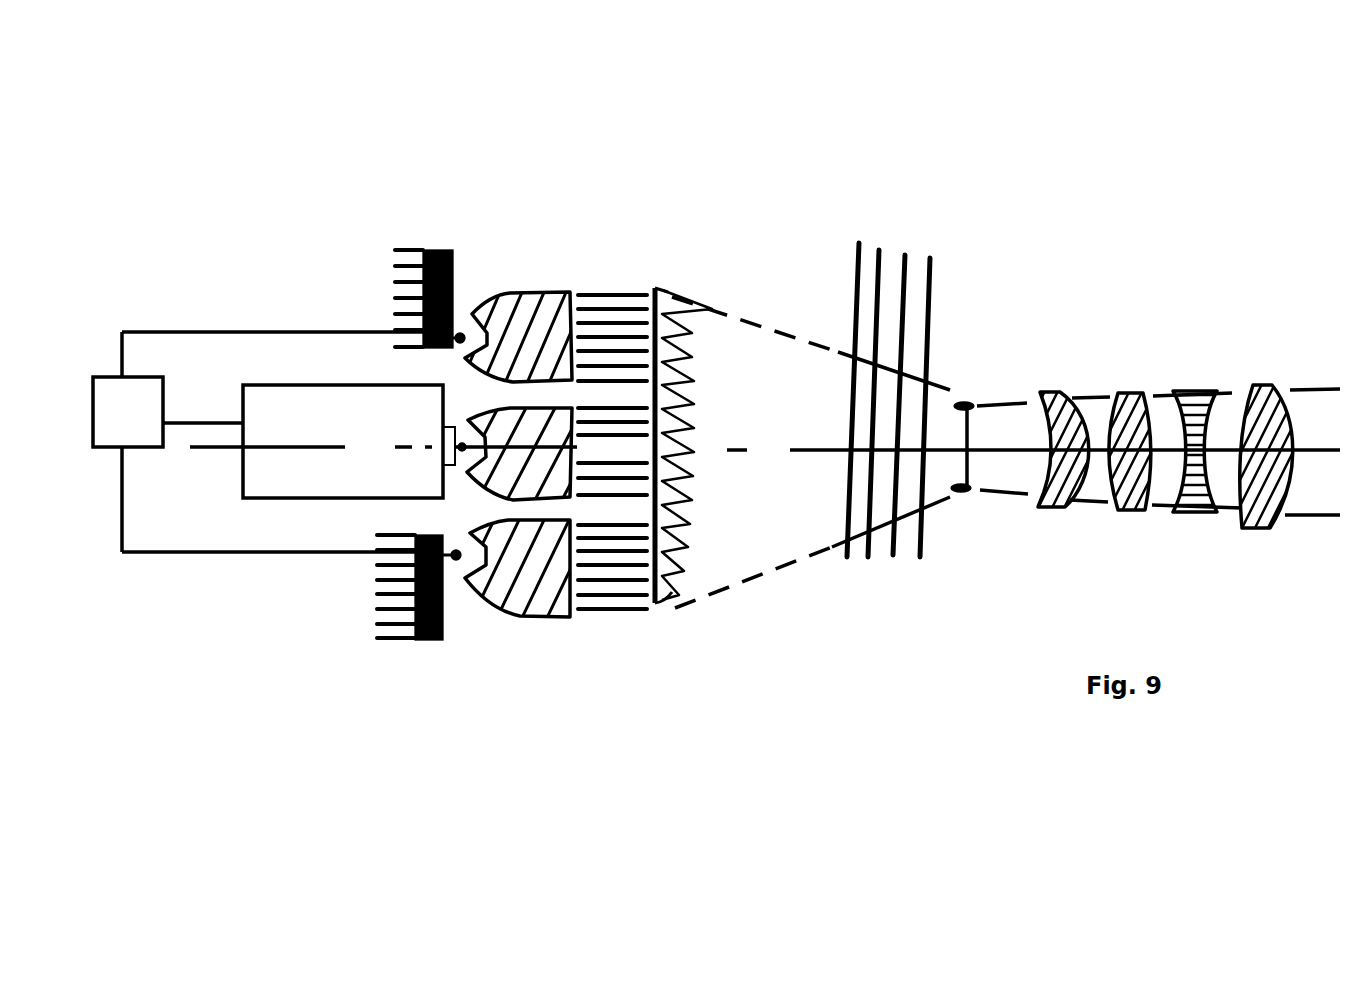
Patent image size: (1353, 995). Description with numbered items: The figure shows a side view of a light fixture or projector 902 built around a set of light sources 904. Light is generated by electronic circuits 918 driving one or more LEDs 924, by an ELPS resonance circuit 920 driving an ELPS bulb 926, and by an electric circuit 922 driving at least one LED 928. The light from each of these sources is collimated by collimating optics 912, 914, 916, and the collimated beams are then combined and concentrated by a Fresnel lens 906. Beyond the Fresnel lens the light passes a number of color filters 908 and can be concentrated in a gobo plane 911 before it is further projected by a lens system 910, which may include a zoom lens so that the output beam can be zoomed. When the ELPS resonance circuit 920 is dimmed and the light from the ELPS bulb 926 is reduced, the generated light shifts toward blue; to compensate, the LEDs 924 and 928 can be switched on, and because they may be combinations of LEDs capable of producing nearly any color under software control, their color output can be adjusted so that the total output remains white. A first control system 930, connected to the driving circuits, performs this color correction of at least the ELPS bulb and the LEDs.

The projector 902 is at (862, 112).
The light sources 904 is at (529, 236).
The Fresnel lens 906 is at (663, 292).
The color filters 908 is at (935, 242).
The lens system 910 is at (1273, 367).
The gobo plane 911 is at (967, 387).
The collimating optics 912 is at (515, 613).
The collimating optics 914 is at (480, 503).
The collimating optics 916 is at (543, 293).
The electronic circuits 918 is at (425, 250).
The ELPS resonance circuit 920 is at (245, 385).
The electric circuit 922 is at (415, 640).
The LEDs 924 is at (463, 330).
The ELPS bulb 926 is at (466, 442).
The LED 928 is at (455, 562).
The first control system 930 is at (128, 412).